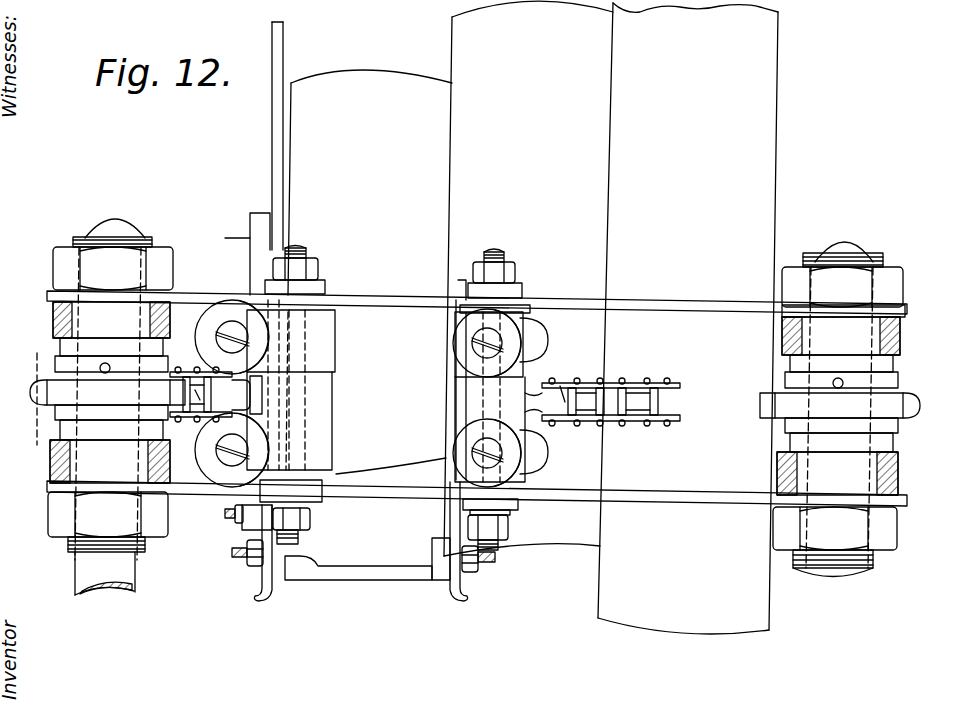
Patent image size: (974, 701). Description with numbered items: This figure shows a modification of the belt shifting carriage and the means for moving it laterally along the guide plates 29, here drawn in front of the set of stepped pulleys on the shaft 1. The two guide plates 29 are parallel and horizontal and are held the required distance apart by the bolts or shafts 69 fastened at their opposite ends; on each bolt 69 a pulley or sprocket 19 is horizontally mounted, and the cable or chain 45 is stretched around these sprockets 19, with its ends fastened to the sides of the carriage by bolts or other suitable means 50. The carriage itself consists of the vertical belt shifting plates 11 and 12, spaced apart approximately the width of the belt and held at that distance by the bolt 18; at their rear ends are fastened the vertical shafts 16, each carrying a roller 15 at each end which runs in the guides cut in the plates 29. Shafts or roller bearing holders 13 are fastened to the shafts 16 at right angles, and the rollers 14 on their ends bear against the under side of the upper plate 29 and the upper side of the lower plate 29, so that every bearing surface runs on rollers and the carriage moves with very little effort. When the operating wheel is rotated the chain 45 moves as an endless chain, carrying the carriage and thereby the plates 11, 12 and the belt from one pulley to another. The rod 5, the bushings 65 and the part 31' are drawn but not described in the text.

The shaft 1 is at (357, 80).
The rod 5 is at (271, 39).
The belt shifting plate 11 is at (466, 595).
The belt shifting plate 12 is at (258, 593).
The roller bearing holder 13 is at (318, 358).
The roller 14 is at (467, 347).
The roller 15 is at (315, 288).
The vertical shaft 16 is at (302, 250).
The bolt 18 is at (365, 560).
The pulley or sprocket 19 is at (32, 388).
The guide plate 29 is at (380, 300).
The bolt shank 31' is at (96, 421).
The cable or chain 45 is at (190, 376).
The bolt 50 is at (218, 402).
The bushing 65 is at (53, 322).
The bolt or shaft 69 is at (131, 214).